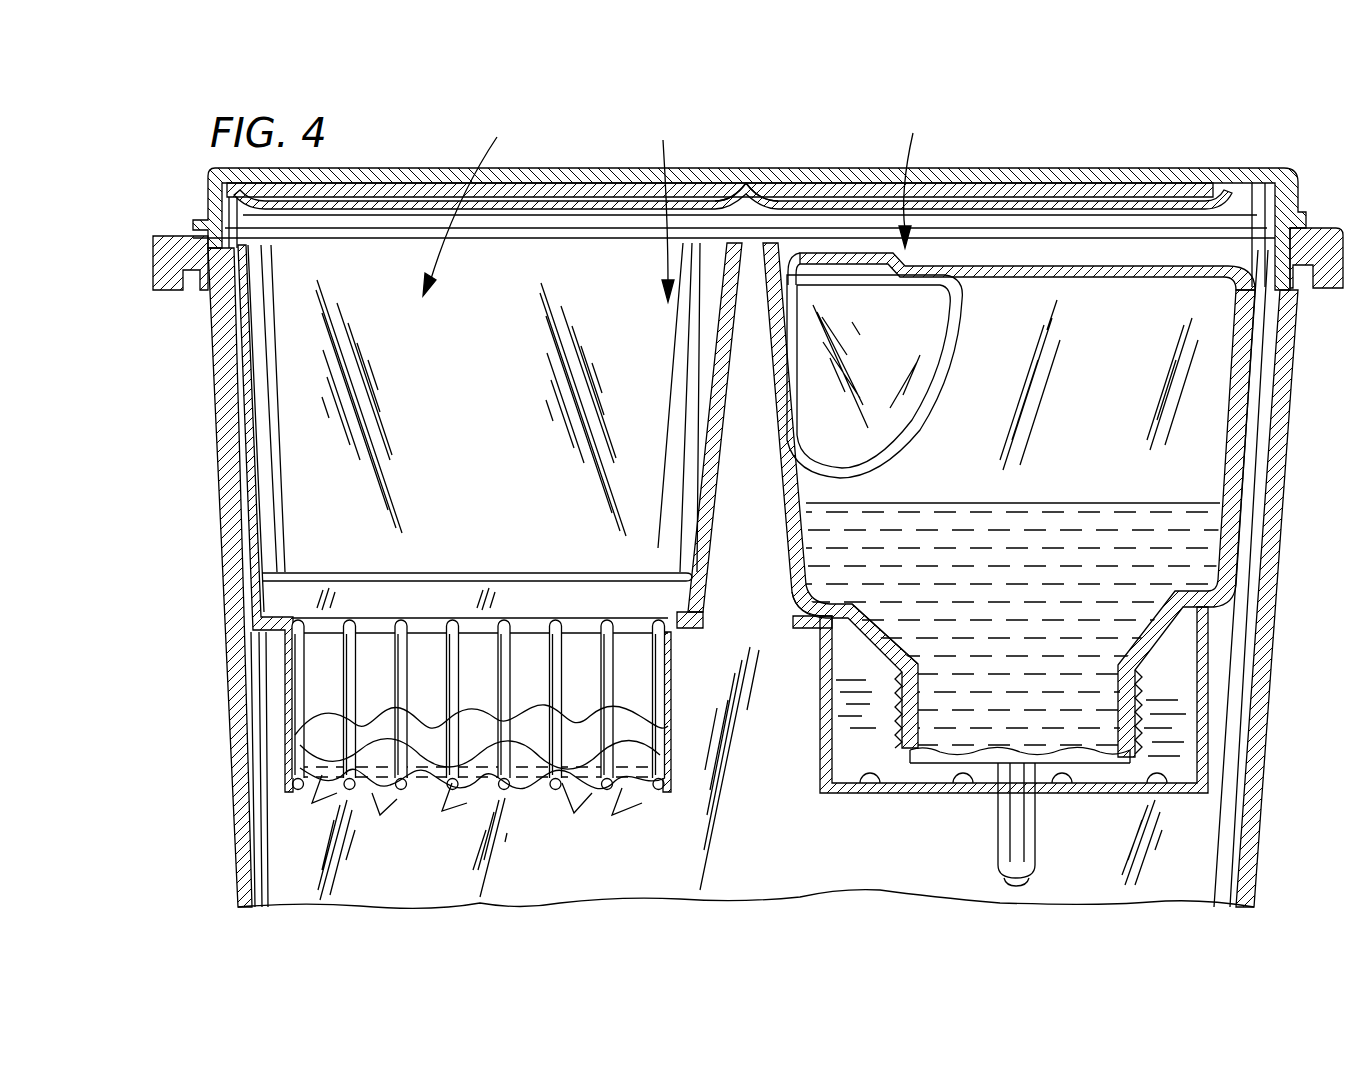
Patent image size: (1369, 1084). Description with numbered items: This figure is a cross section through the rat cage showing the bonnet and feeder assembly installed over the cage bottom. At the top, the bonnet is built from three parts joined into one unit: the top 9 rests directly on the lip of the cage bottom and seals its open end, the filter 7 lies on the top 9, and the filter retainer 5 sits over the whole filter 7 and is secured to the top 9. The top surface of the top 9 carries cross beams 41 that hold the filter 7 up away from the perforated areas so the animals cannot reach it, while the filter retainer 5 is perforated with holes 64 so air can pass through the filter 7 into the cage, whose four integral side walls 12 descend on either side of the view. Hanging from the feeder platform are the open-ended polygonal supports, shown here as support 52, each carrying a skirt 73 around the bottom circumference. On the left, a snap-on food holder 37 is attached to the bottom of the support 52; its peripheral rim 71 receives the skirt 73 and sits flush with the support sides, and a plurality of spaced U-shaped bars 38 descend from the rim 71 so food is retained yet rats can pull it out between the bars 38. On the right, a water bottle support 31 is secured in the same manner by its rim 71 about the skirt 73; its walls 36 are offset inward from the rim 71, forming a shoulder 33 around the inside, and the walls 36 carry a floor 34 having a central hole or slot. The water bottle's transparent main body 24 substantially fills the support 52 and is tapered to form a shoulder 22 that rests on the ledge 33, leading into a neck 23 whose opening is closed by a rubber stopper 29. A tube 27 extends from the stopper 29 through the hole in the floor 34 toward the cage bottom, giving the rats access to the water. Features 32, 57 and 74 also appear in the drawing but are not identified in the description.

The filter retainer 5 is at (1285, 166).
The filter 7 is at (600, 198).
The top 9 is at (993, 210).
The side walls 12 is at (238, 835).
The shoulder 22 is at (826, 603).
The neck 23 is at (888, 660).
The main body 24 is at (1205, 402).
The tube 27 is at (1040, 838).
The rubber stopper 29 is at (1110, 770).
The water bottle support 31 is at (1205, 712).
The bottom plate 32 is at (992, 792).
The shoulder 33 is at (810, 625).
The floor 34 is at (905, 795).
The walls 36 is at (1192, 648).
The food holder 37 is at (288, 722).
The U-shaped bars 38 is at (518, 784).
The cross beams 41 is at (748, 190).
The first support 52 is at (1058, 212).
The gasket 57 is at (560, 213).
The holes 64 is at (840, 183).
The peripheral rim 71 is at (700, 630).
The skirt 73 is at (790, 572).
The flange 74 is at (788, 606).